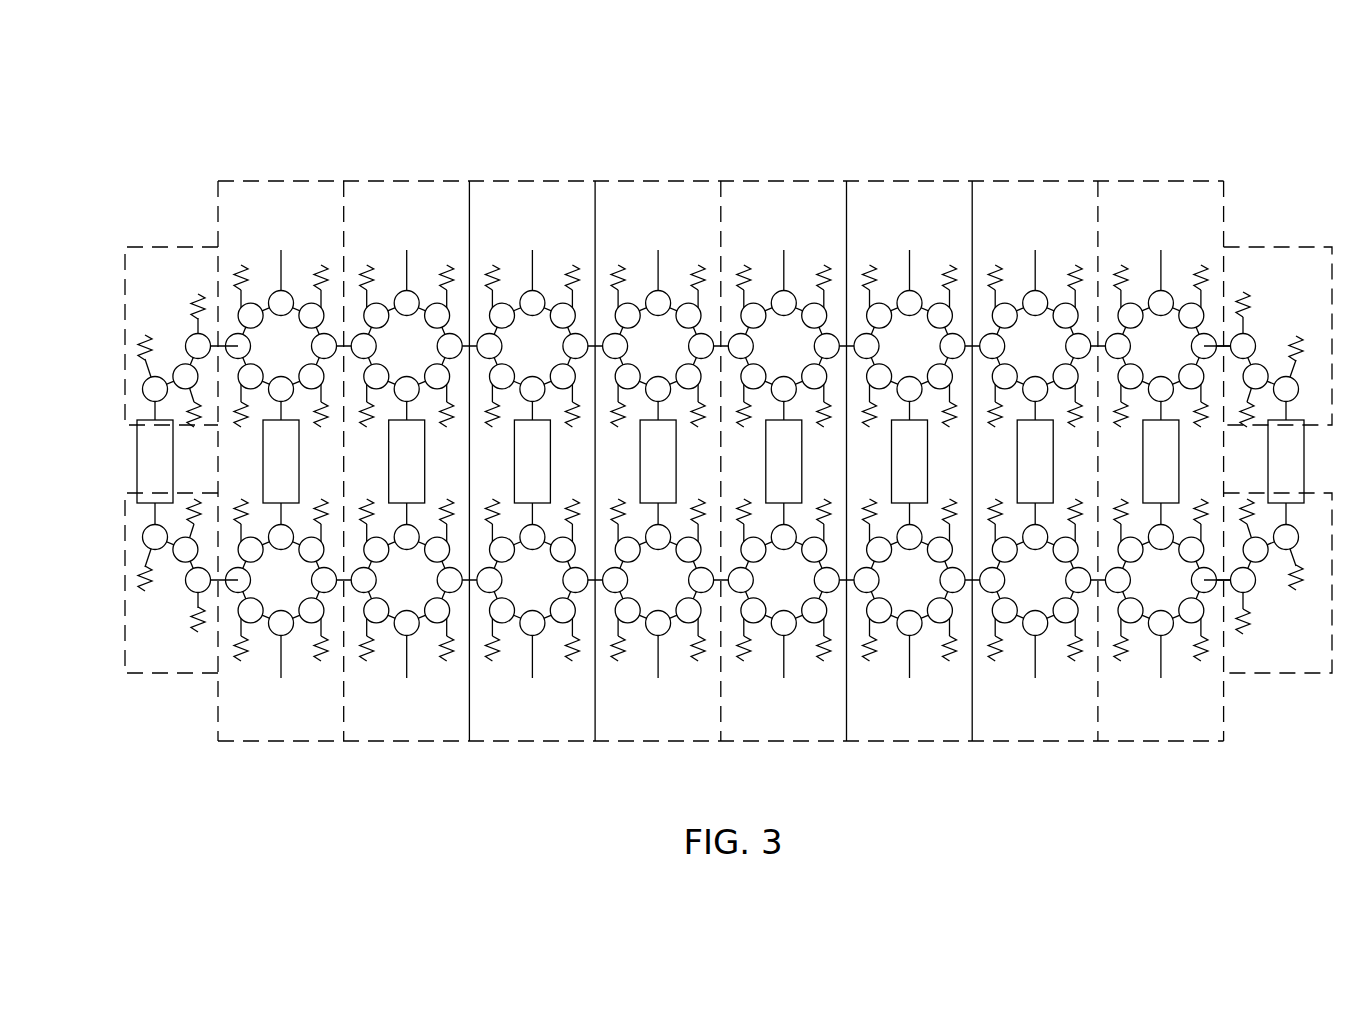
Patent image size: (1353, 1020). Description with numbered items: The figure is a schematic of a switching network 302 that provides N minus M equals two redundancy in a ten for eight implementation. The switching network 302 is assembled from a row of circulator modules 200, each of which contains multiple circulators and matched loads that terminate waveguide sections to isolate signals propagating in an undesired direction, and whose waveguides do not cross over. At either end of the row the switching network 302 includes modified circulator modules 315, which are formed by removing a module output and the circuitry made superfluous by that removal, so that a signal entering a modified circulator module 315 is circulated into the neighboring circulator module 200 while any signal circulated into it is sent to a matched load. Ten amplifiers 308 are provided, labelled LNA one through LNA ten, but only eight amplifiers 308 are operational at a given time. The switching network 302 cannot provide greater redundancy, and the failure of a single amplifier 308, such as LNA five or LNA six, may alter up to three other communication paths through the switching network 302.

The switching network 302 is at (1222, 93).
The circulator module 200 is at (731, 461).
The amplifier 308 is at (684, 461).
The modified circulator module 315 is at (728, 461).